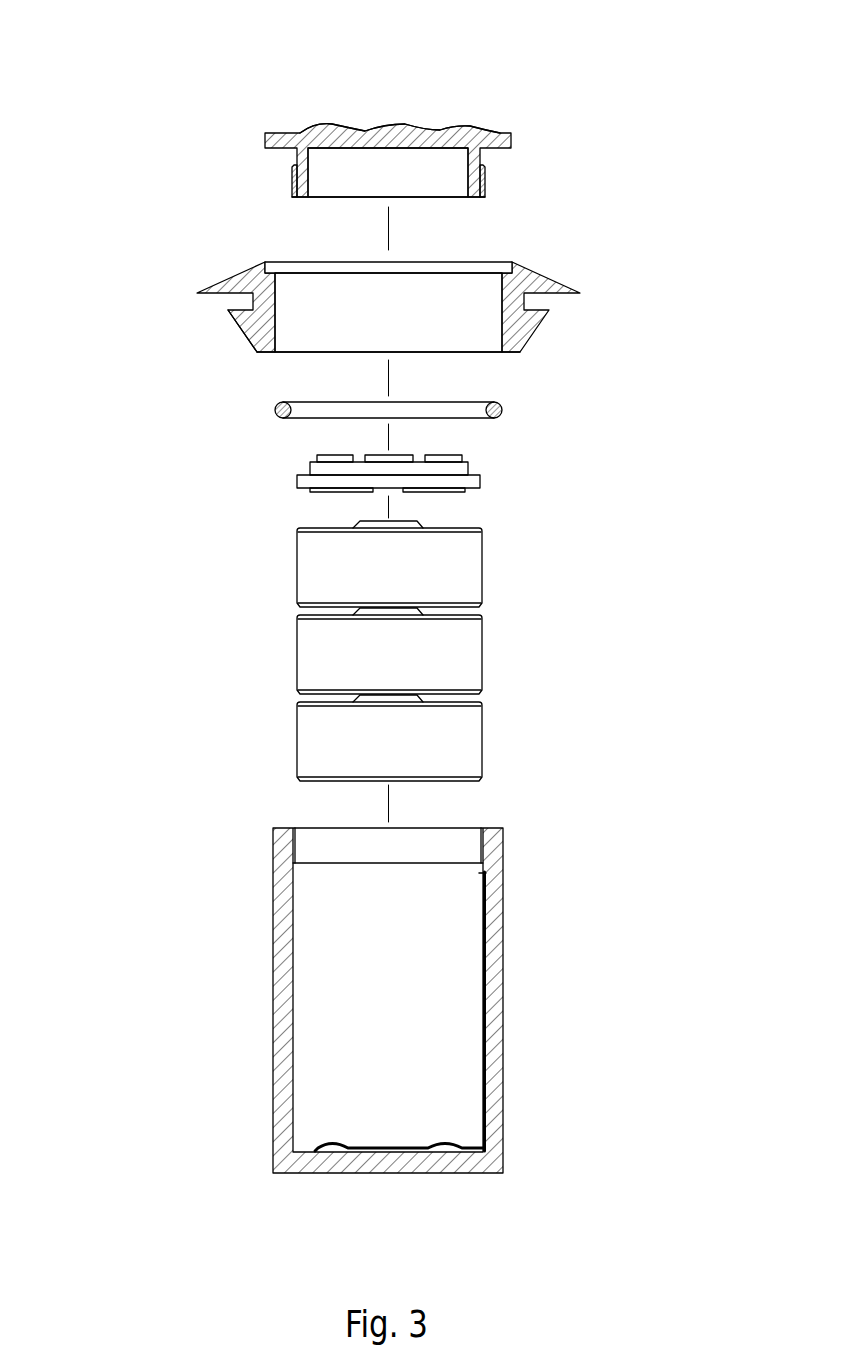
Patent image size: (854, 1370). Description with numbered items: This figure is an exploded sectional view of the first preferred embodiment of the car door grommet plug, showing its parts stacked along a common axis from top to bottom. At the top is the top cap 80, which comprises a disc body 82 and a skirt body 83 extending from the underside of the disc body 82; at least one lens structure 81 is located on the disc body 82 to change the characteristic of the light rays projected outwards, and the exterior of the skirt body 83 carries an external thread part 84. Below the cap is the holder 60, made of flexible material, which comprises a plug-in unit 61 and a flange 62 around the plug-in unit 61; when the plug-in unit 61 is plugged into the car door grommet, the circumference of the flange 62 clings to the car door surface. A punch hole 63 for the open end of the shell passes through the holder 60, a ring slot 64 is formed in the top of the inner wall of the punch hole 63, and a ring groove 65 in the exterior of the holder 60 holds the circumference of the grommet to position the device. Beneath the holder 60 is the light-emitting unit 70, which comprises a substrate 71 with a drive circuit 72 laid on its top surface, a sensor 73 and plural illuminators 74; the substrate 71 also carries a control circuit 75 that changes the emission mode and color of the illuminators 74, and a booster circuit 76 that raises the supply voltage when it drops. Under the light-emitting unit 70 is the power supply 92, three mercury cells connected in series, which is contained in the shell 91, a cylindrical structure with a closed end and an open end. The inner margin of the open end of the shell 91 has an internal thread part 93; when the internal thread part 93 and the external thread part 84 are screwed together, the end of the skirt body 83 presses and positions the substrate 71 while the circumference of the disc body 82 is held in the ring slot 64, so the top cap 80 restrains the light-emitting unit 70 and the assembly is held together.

The holder 60 is at (381, 299).
The plug-in unit 61 is at (253, 323).
The flange 62 is at (228, 277).
The punch hole 63 is at (467, 340).
The ring slot 64 is at (505, 270).
The ring groove 65 is at (533, 302).
The light-emitting unit 70 is at (367, 468).
The substrate 71 is at (463, 480).
The drive circuit 72 is at (457, 467).
The sensor 73 is at (365, 455).
The illuminators 74 is at (450, 457).
The control circuit 75 is at (443, 489).
The booster circuit 76 is at (327, 491).
The top cap 80 is at (388, 114).
The lens structure 81 is at (447, 125).
The disc body 82 is at (502, 137).
The skirt body 83 is at (293, 183).
The external thread part 84 is at (483, 182).
The shell 91 is at (431, 989).
The power supply 92 is at (283, 642).
The internal thread part 93 is at (297, 840).